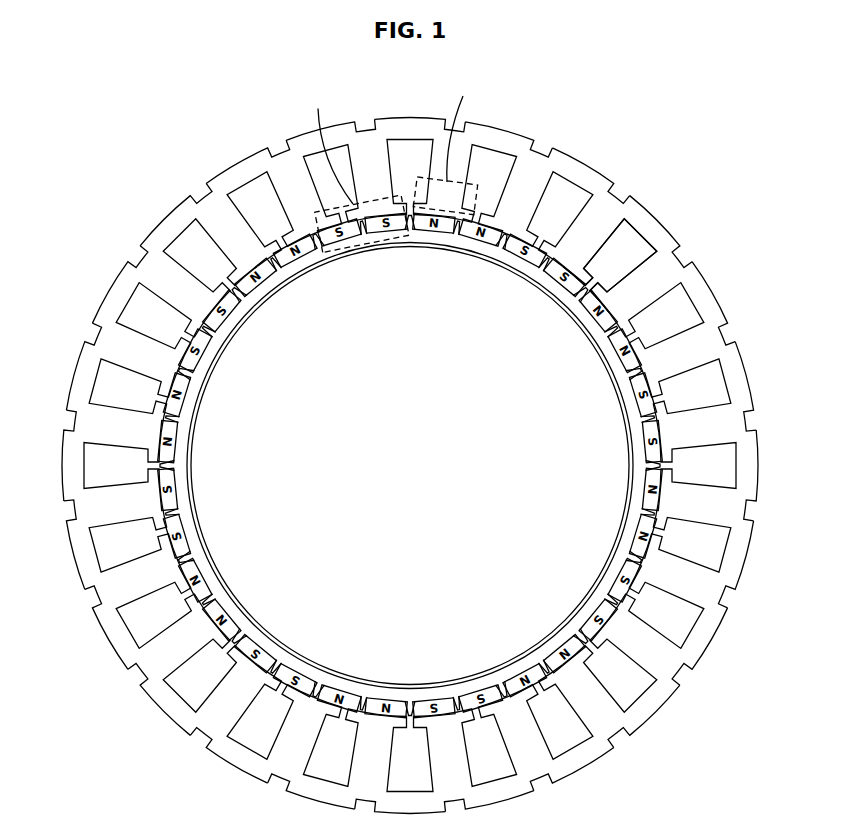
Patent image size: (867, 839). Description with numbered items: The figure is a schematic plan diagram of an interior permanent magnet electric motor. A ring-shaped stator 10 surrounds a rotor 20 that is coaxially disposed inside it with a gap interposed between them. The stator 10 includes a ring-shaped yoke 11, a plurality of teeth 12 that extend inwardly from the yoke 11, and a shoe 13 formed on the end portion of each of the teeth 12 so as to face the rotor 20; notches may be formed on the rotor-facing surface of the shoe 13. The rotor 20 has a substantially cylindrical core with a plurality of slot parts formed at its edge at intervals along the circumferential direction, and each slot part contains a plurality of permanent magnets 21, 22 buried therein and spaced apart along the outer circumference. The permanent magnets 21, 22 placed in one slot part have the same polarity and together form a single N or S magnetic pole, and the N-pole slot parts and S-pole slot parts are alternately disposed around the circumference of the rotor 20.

The stator 10 is at (660, 194).
The yoke 11 is at (410, 462).
The teeth 12 is at (410, 441).
The shoe 13 is at (640, 262).
The rotor 20 is at (410, 465).
The first permanent magnet 21 is at (336, 272).
The second permanent magnet 22 is at (392, 259).